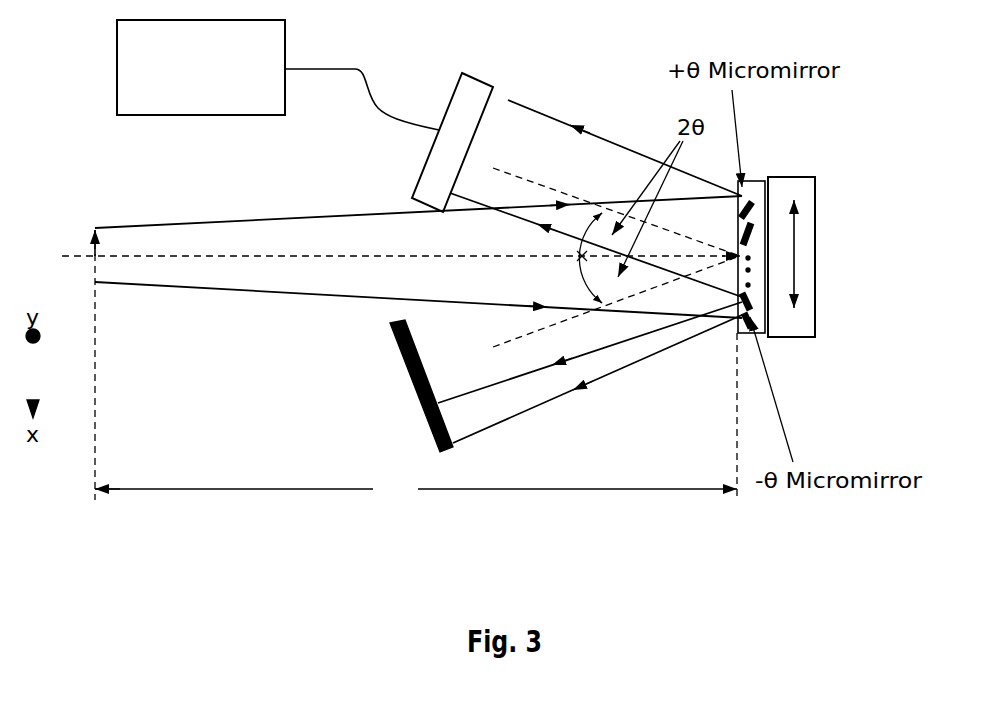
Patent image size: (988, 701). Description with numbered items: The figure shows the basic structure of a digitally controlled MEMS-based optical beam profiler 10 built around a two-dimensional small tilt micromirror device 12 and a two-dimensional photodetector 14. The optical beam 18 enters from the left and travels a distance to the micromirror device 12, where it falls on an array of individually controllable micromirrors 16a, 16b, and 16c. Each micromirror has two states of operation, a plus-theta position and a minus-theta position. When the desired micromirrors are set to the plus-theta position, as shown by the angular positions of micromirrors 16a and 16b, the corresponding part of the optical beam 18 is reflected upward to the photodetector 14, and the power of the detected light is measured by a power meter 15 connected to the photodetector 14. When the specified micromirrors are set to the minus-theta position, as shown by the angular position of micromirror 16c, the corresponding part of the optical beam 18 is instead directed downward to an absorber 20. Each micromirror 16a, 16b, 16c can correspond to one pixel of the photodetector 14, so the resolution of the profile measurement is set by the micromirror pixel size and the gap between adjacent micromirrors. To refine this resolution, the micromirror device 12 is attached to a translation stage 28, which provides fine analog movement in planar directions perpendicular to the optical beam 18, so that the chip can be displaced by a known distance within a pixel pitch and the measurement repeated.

The optical beam profiler 10 is at (48, 138).
The micromirror device 12 is at (742, 317).
The photodetector 14 is at (453, 92).
The power meter 15 is at (241, 118).
The micromirror 16a is at (750, 203).
The micromirror 16b is at (760, 197).
The micromirror 16c is at (763, 320).
The optical beam 18 is at (215, 220).
The absorber 20 is at (398, 355).
The translation stage 28 is at (817, 292).